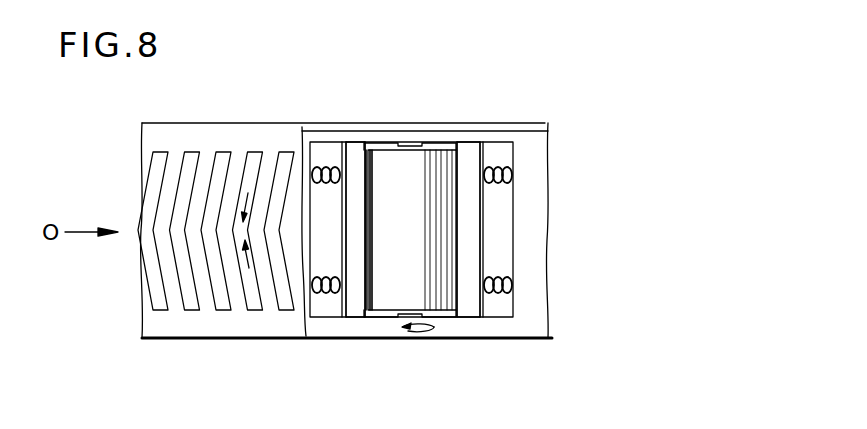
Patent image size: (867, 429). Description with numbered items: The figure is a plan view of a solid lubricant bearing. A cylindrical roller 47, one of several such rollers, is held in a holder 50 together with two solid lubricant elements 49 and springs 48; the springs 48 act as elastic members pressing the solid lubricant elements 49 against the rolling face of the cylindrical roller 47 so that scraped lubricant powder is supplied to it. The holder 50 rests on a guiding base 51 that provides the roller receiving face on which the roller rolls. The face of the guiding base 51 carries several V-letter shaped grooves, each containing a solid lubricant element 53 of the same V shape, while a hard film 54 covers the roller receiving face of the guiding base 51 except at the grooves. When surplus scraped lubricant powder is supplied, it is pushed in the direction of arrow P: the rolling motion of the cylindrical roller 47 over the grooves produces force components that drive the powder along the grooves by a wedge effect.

The cylindrical roller 47 is at (423, 238).
The spring 48 is at (336, 270).
The solid lubricant element 49 is at (355, 307).
The holder 50 is at (535, 237).
The guiding base 51 is at (200, 342).
The solid lubricant element 53 is at (255, 293).
The hard film 54 is at (245, 138).